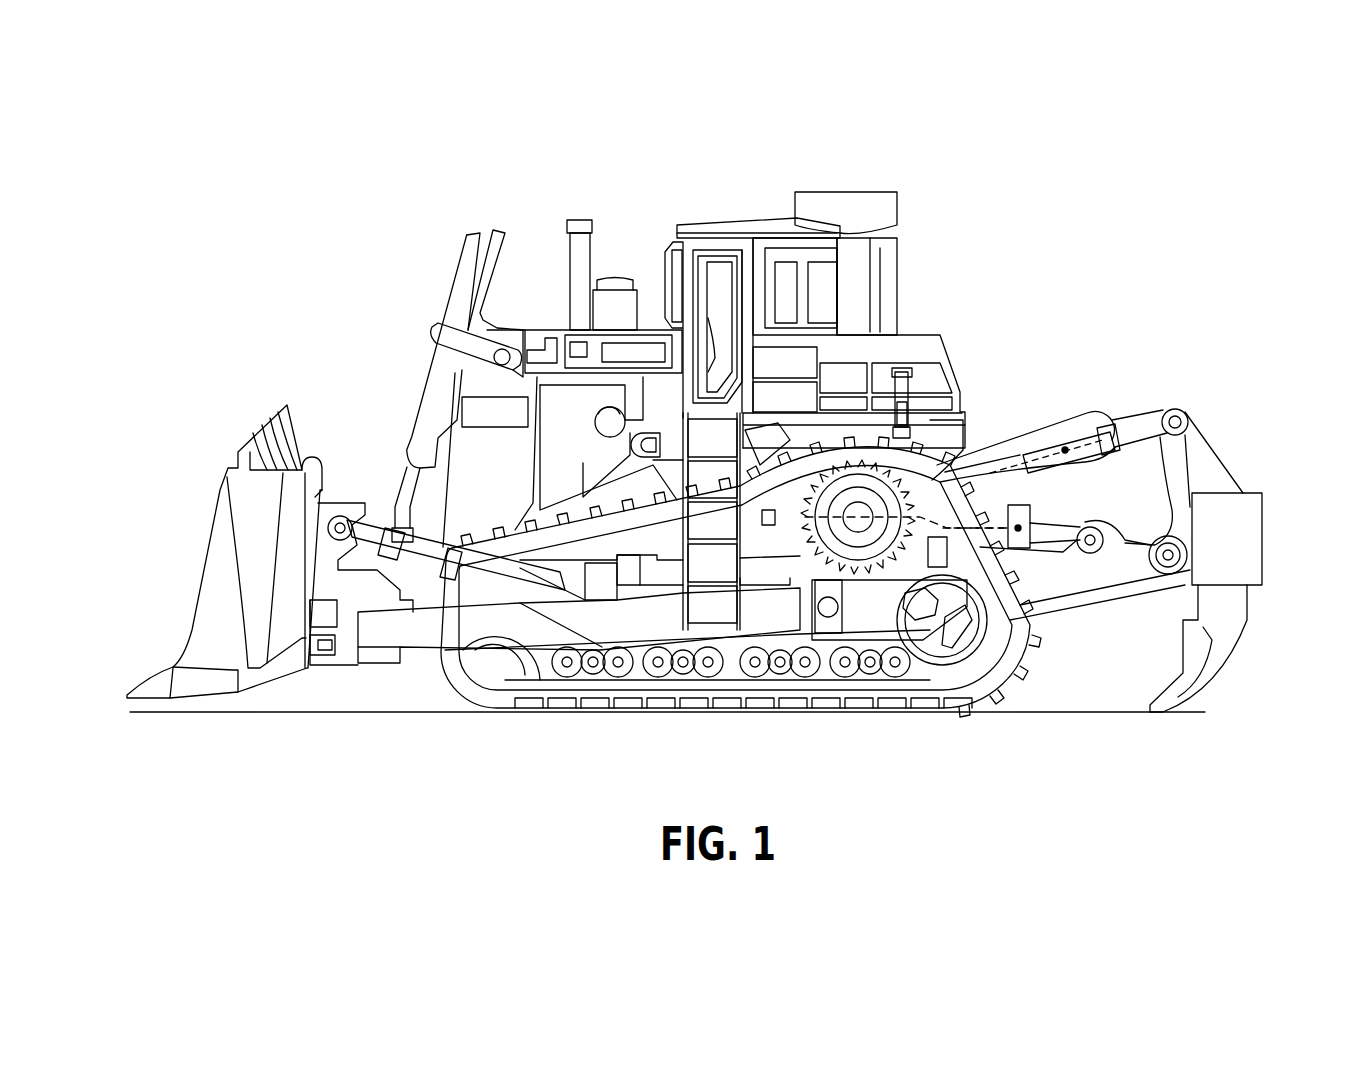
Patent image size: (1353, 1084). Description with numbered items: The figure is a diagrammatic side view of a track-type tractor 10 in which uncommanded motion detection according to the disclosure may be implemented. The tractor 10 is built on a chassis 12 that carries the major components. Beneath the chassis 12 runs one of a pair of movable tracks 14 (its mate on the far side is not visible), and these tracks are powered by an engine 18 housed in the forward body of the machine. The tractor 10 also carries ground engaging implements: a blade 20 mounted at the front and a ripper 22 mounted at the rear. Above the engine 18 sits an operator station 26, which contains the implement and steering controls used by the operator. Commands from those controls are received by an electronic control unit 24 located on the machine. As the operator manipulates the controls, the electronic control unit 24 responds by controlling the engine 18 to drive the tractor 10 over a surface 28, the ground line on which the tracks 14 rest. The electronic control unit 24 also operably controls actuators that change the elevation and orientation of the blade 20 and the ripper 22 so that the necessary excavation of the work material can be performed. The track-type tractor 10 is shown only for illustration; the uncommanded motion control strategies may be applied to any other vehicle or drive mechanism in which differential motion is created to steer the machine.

The track-type tractor 10 is at (735, 198).
The chassis 12 is at (772, 343).
The movable track 14 is at (580, 690).
The engine 18 is at (570, 410).
The blade 20 is at (220, 508).
The ripper 22 is at (1251, 650).
The electronic control unit 24 is at (932, 562).
The operator station 26 is at (780, 237).
The surface 28 is at (315, 695).